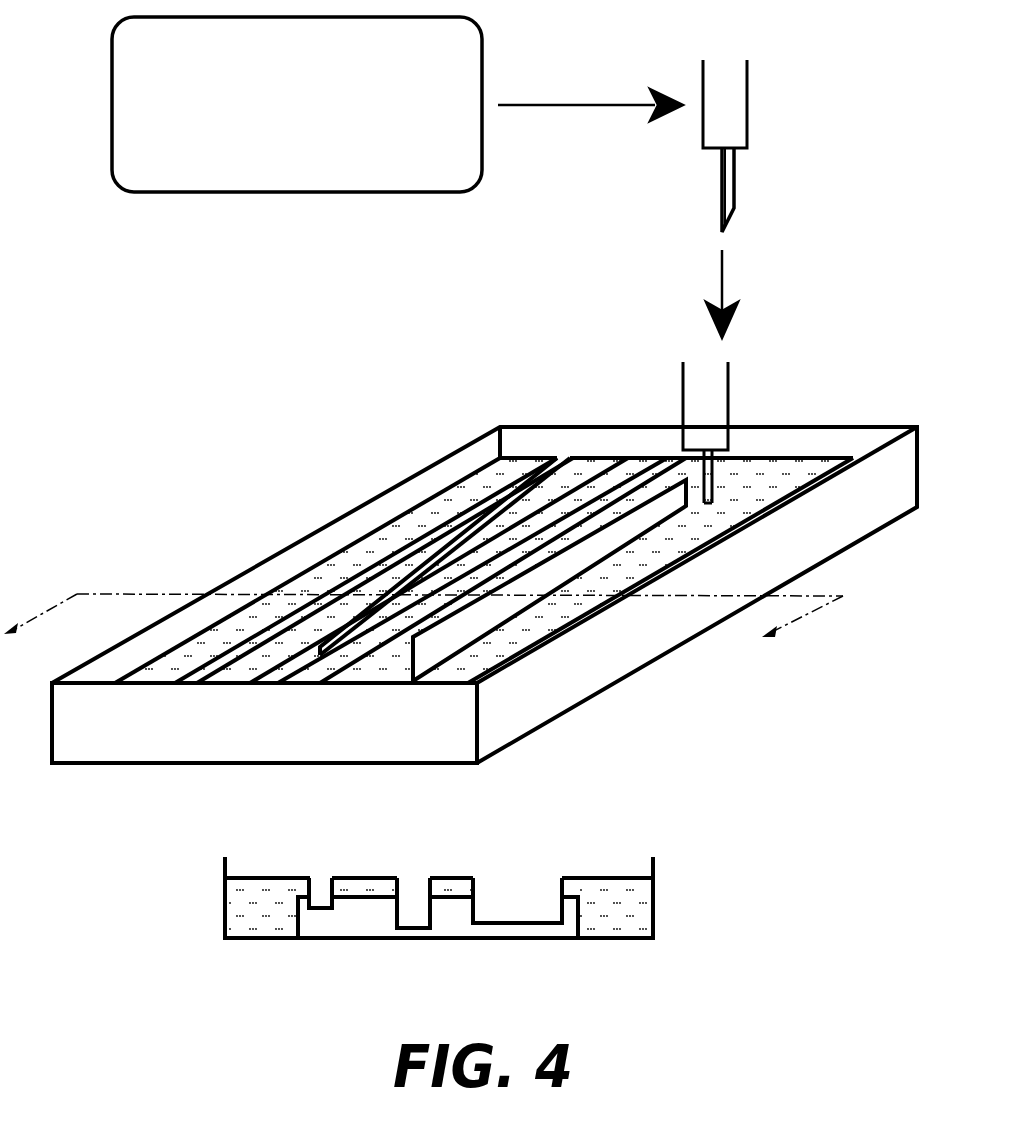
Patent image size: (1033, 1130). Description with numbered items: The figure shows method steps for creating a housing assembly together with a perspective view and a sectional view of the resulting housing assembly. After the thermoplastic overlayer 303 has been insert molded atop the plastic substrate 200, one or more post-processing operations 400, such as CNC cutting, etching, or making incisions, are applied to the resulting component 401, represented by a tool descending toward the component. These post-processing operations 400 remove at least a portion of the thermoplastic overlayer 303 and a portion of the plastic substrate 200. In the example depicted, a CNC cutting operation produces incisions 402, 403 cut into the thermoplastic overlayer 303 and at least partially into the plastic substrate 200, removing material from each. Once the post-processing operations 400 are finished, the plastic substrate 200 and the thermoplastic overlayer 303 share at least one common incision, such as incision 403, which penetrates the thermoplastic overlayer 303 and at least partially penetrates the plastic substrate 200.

The post-processing operations 400 is at (253, 192).
The component 401 is at (674, 667).
The thermoplastic overlayer 303 is at (450, 503).
The plastic substrate 200 is at (647, 515).
The incision 402 is at (414, 900).
The incision 403 is at (518, 895).